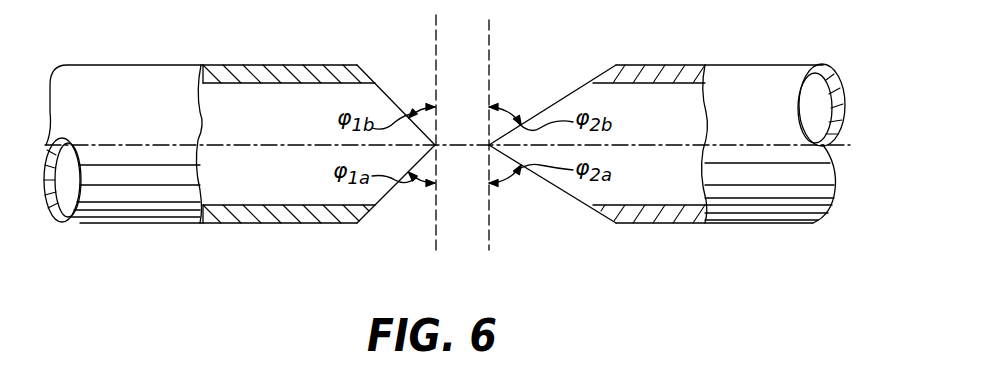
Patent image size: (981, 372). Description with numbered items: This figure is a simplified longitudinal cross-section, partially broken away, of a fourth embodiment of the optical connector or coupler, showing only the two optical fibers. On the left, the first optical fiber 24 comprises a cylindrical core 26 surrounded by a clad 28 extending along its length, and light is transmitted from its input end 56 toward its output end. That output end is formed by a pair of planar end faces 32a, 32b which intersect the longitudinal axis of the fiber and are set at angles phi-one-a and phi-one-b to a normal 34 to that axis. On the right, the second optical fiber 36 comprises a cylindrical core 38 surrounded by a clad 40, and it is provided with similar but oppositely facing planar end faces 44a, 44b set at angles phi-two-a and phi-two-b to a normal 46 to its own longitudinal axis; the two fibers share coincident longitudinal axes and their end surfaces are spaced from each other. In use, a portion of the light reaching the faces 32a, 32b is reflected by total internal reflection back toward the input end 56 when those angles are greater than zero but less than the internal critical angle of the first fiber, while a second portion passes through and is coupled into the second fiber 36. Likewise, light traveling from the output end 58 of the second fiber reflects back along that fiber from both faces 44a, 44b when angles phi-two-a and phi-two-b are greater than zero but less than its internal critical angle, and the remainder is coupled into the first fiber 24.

The first optical fiber 24 is at (165, 183).
The cylindrical core 26 is at (52, 198).
The clad 28 is at (62, 212).
The planar end face 32a is at (383, 199).
The planar end face 32b is at (388, 97).
The normal 34 is at (436, 28).
The second optical fiber 36 is at (767, 178).
The cylindrical core 38 is at (812, 112).
The clad 40 is at (836, 72).
The planar end face 44a is at (572, 197).
The planar end face 44b is at (556, 104).
The normal 46 is at (489, 22).
The input end 56 is at (52, 88).
The output end 58 is at (835, 185).